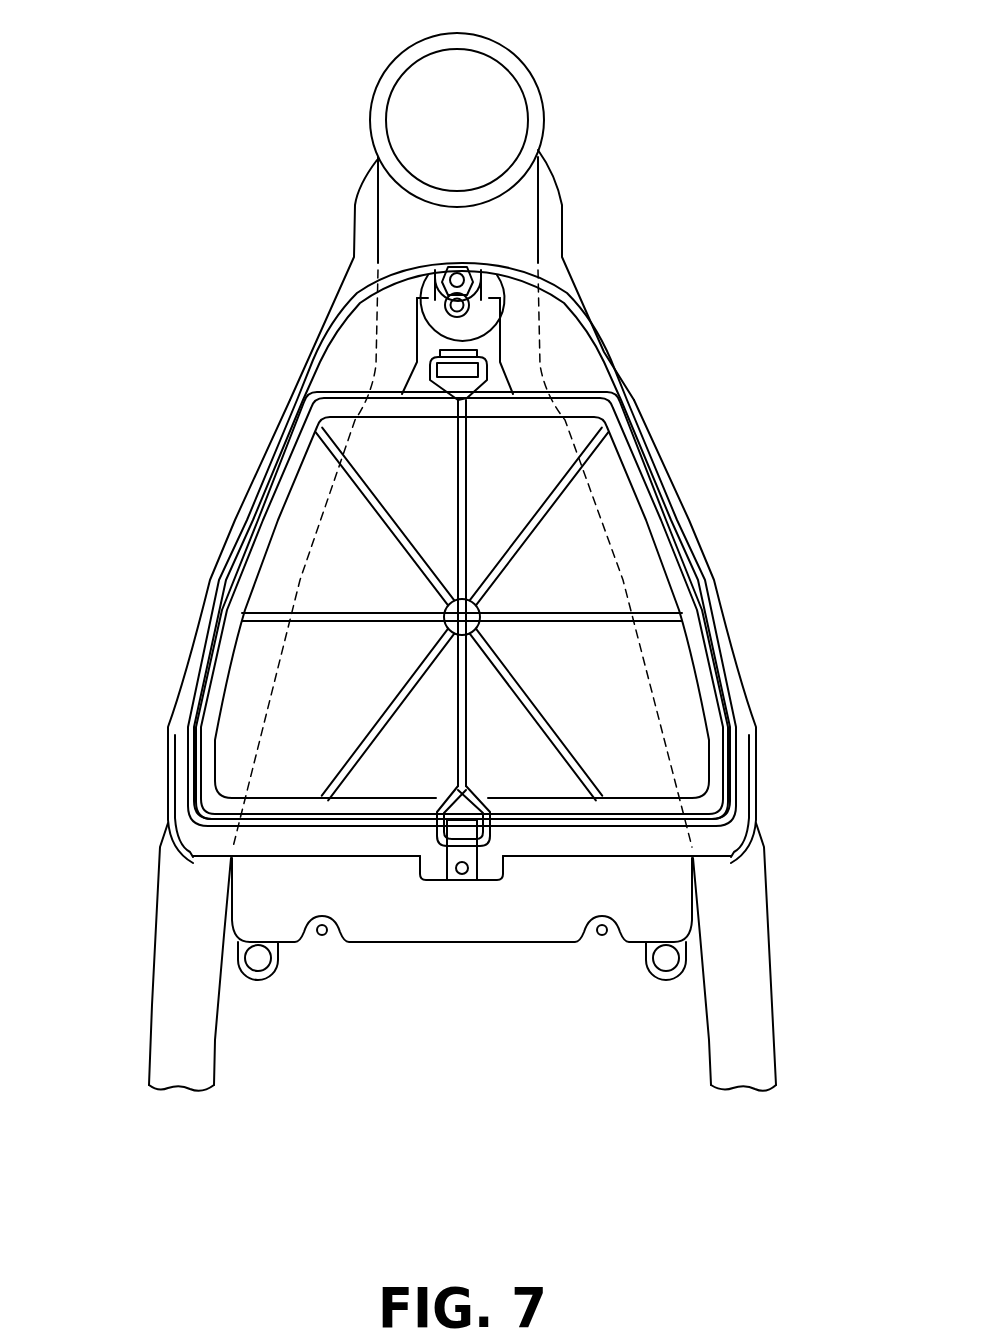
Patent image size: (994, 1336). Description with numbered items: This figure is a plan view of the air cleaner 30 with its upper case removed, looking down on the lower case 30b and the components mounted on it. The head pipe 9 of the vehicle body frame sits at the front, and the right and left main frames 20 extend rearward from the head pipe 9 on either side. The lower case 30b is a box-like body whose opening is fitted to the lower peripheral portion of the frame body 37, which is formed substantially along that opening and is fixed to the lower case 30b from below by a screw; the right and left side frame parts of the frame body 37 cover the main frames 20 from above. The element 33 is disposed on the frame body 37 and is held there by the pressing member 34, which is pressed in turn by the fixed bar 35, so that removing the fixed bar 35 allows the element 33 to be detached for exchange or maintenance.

The head pipe 9 is at (386, 70).
The main frames 20 is at (151, 1028).
The air cleaner 30 is at (558, 282).
The lower case 30b is at (483, 943).
The element 33 is at (625, 527).
The pressing member 34 is at (577, 393).
The fixed bar 35 is at (470, 455).
The frame body 37 is at (574, 862).